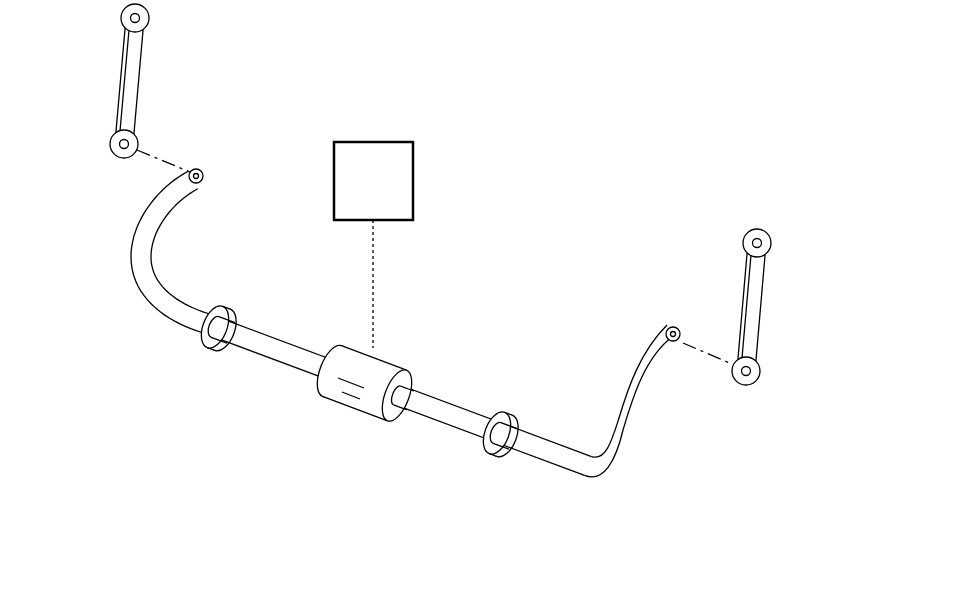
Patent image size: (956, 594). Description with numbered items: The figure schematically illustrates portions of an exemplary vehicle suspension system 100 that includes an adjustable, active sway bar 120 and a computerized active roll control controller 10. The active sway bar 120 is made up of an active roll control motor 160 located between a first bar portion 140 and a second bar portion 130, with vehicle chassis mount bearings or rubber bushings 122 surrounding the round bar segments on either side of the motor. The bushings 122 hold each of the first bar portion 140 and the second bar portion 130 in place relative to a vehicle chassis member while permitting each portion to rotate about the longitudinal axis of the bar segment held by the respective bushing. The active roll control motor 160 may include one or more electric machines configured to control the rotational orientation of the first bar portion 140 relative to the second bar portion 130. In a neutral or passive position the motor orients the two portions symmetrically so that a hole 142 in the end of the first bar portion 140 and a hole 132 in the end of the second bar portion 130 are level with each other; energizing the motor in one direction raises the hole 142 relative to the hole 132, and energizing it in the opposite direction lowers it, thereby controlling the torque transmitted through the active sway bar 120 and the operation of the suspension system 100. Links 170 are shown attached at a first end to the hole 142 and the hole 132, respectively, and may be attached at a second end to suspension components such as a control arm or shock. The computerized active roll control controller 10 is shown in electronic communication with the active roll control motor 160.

The vehicle suspension system 100 is at (722, 73).
The computerized active roll control controller 10 is at (388, 142).
The active sway bar 120 is at (567, 555).
The vehicle chassis mount bearings or rubber bushings 122 is at (222, 306).
The second bar portion 130 is at (608, 449).
The hole 132 is at (672, 325).
The first bar portion 140 is at (130, 273).
The hole 142 is at (197, 168).
The active roll control motor 160 is at (354, 393).
The links 170 is at (118, 97).